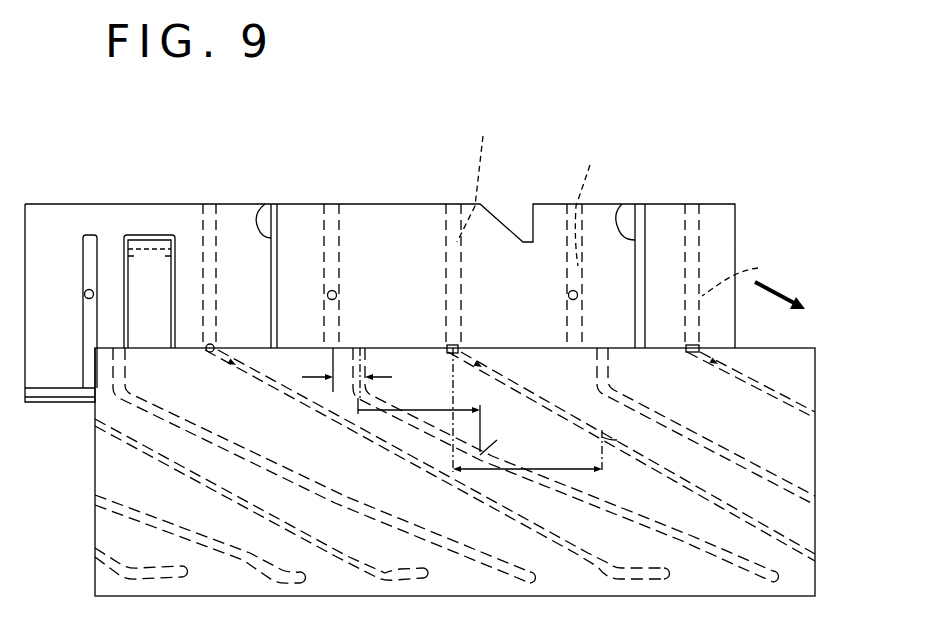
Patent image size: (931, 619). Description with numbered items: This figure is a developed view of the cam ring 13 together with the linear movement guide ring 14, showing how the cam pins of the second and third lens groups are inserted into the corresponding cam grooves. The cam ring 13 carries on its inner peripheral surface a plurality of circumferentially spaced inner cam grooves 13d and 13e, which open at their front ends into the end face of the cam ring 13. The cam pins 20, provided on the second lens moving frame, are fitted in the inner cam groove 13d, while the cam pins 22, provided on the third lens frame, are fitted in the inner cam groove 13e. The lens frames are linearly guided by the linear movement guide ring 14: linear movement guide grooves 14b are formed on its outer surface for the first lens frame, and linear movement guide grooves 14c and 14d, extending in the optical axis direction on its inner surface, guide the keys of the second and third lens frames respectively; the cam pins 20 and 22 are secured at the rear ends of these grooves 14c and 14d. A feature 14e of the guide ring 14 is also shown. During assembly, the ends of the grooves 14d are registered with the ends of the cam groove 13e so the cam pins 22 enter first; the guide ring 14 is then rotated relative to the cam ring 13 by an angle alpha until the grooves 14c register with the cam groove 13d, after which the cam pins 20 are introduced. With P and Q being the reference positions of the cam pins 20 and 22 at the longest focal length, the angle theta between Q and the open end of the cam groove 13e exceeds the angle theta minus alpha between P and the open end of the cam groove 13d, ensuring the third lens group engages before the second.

The cam ring 13 is at (815, 386).
The inner cam groove 13d is at (692, 441).
The inner cam groove 13e is at (515, 385).
The linear movement guide ring 14 is at (736, 229).
The linear movement guide grooves 14b is at (270, 212).
The linear movement guide grooves 14c is at (595, 200).
The linear movement guide grooves 14d is at (631, 208).
The notch 14e is at (273, 206).
The cam pins 20 is at (337, 294).
The cam pins 22 is at (686, 345).